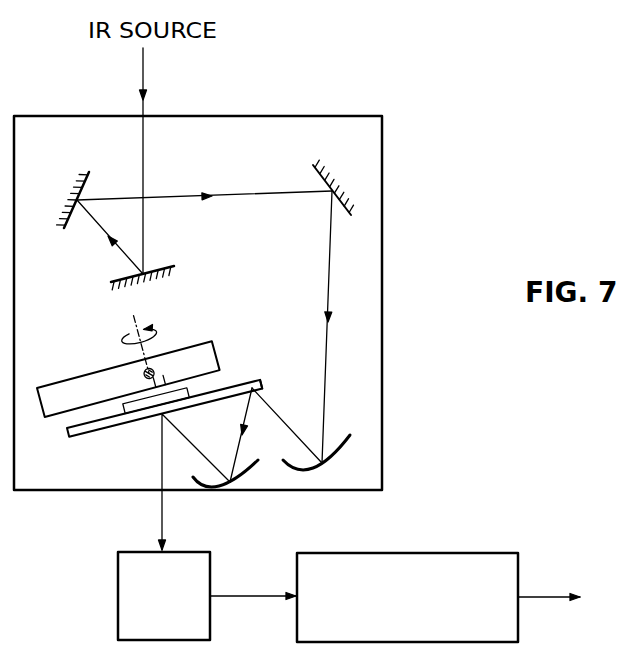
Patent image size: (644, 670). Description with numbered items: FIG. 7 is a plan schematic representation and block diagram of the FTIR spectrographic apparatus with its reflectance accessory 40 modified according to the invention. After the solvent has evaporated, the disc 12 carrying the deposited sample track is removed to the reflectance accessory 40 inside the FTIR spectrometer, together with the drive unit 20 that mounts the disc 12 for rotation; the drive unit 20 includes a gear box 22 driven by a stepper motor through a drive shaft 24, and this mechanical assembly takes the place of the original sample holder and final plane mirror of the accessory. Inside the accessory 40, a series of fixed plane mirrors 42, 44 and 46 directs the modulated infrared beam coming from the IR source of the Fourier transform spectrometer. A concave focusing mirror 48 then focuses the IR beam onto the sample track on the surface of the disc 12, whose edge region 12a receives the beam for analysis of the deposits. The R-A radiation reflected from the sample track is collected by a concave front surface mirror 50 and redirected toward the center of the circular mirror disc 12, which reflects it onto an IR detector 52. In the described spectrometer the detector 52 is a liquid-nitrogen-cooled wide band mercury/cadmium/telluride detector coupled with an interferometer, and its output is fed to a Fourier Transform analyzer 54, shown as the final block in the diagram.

The disc 12 is at (112, 427).
The reflective end of sample plate 12a is at (255, 389).
The drive unit 20 is at (228, 362).
The gear box 22 is at (122, 357).
The drive shaft 24 is at (149, 373).
The reflectance accessory 40 is at (320, 116).
The fixed plane mirror 42 is at (120, 279).
The fixed plane mirror 44 is at (90, 174).
The fixed plane mirror 46 is at (314, 166).
The concave focusing mirror 48 is at (339, 452).
The concave front surface mirror 50 is at (203, 480).
The IR detector 52 is at (118, 592).
The Fourier Transform analyzer 54 is at (388, 553).
The radiation reflected from the sample track R-A is at (233, 455).